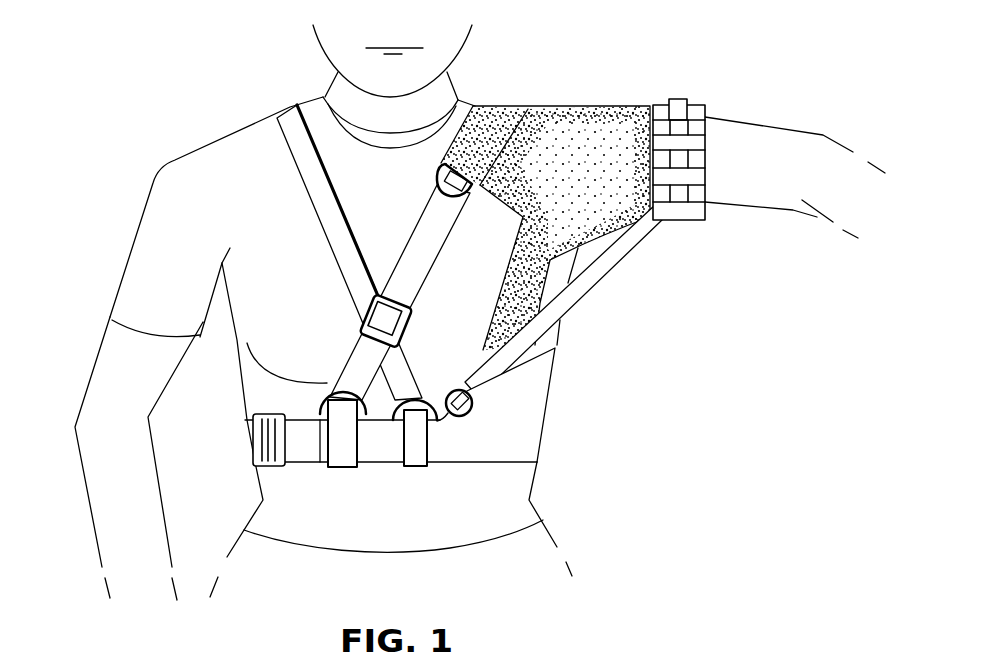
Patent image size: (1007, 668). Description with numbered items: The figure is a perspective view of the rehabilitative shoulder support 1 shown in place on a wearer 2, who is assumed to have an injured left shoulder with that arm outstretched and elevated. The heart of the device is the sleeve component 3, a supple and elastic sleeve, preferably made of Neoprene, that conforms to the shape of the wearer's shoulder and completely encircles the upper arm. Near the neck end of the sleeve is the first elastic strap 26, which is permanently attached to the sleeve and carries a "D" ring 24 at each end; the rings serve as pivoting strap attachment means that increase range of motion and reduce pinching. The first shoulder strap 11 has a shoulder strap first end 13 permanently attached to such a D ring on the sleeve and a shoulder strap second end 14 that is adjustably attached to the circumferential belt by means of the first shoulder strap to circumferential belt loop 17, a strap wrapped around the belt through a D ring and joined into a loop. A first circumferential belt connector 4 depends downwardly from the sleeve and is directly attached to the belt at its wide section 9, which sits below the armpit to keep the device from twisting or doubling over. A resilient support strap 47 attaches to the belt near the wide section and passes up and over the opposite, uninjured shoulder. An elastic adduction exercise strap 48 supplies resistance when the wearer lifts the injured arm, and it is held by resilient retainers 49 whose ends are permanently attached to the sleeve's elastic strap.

The rehabilitative shoulder support 1 is at (622, 67).
The wearer 2 is at (163, 167).
The sleeve component 3 is at (596, 171).
The first circumferential belt connector 4 is at (510, 288).
The circumferential belt wide section 9 is at (514, 421).
The first shoulder strap 11 is at (412, 263).
The shoulder strap first end 13 is at (447, 193).
The shoulder strap second end 14 is at (347, 392).
The first shoulder strap to circumferential belt loop 17 is at (342, 455).
The "D" ring 24 is at (447, 398).
The first elastic strap 26 is at (488, 127).
The support strap 47 is at (310, 179).
The elastic adduction exercise strap 48 is at (603, 270).
The retainers 49 is at (697, 125).